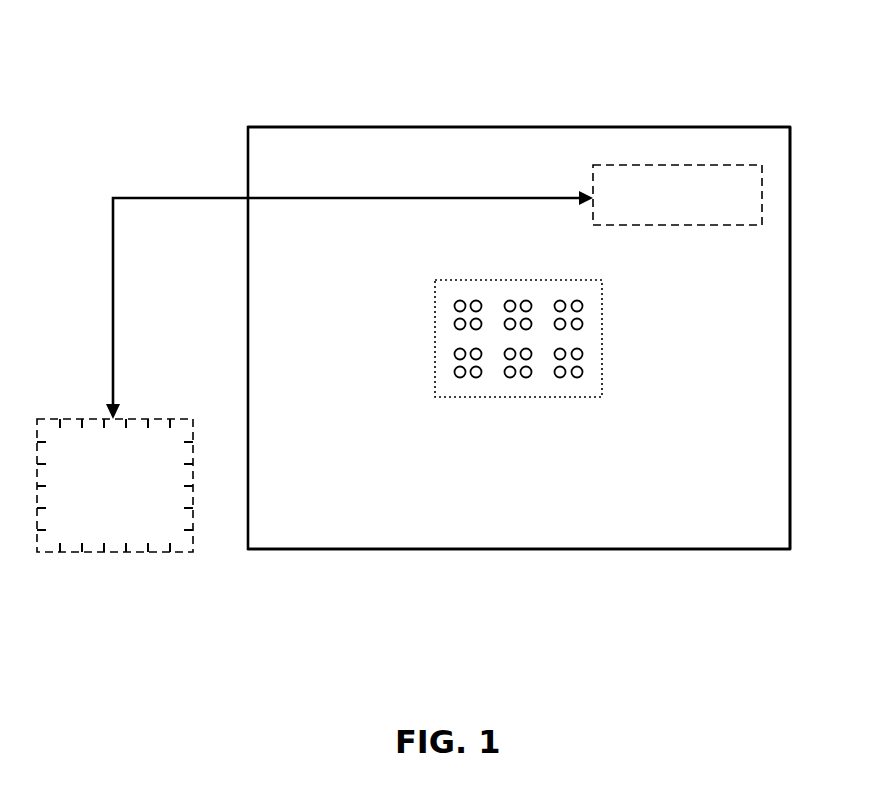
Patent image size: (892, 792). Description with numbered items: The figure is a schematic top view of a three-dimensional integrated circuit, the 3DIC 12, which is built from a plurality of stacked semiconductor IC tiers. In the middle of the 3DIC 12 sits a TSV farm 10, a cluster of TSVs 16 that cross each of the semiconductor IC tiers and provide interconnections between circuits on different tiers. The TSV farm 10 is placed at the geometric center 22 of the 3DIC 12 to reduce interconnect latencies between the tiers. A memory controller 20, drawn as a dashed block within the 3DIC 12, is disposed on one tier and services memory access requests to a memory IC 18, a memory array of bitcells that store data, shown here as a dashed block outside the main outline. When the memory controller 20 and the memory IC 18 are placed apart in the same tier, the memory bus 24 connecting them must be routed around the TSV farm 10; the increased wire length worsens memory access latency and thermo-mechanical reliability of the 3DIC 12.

The TSV farm 10 is at (518, 280).
The 3DIC 12 is at (497, 127).
The TSVs 16 is at (582, 367).
The memory IC 18 is at (160, 552).
The memory controller 20 is at (718, 225).
The geometric center 22 is at (510, 456).
The memory bus 24 is at (421, 198).